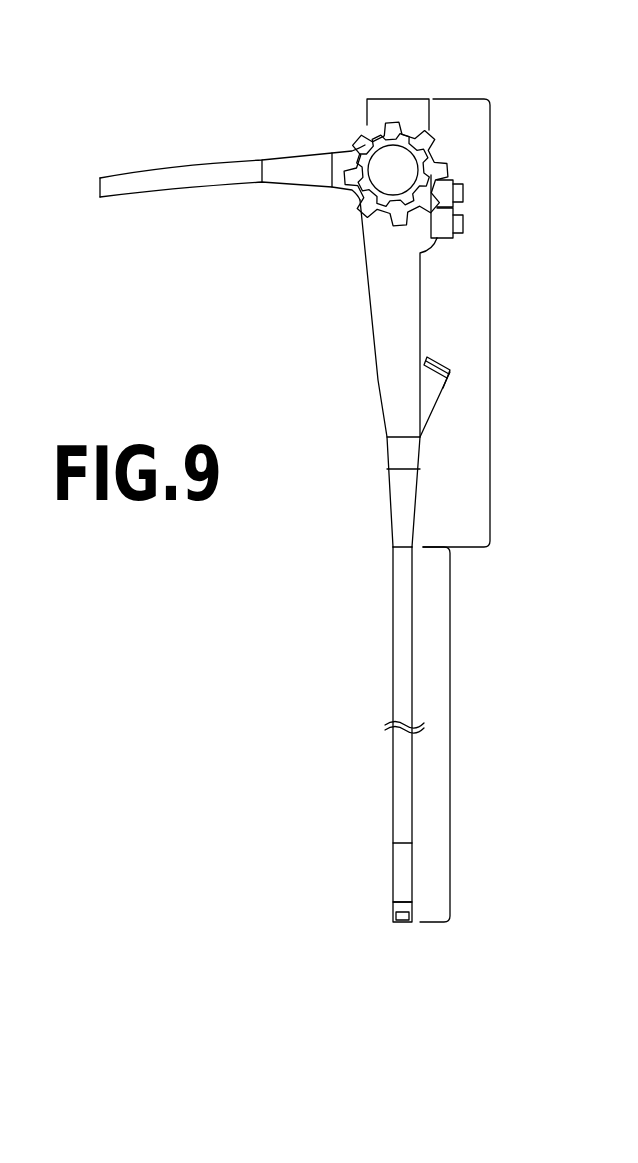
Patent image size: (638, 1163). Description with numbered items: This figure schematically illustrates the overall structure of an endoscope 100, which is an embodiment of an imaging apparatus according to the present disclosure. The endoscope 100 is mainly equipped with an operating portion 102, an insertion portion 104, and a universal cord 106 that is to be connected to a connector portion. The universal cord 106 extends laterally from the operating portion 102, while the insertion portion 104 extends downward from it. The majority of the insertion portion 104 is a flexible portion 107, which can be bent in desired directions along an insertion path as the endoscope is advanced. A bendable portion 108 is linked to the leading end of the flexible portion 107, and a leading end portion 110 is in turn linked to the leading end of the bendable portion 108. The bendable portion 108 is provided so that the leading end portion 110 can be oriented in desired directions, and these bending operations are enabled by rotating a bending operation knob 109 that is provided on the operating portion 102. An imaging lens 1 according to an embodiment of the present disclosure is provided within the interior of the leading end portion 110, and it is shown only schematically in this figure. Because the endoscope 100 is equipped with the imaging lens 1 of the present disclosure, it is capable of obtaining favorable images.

The endoscope 100 is at (346, 80).
The operating portion 102 is at (488, 349).
The insertion portion 104 is at (450, 735).
The universal cord 106 is at (139, 168).
The flexible portion 107 is at (392, 648).
The bendable portion 108 is at (392, 874).
The bending operation knob 109 is at (388, 176).
The leading end portion 110 is at (392, 912).
The imaging lens 1 is at (404, 927).